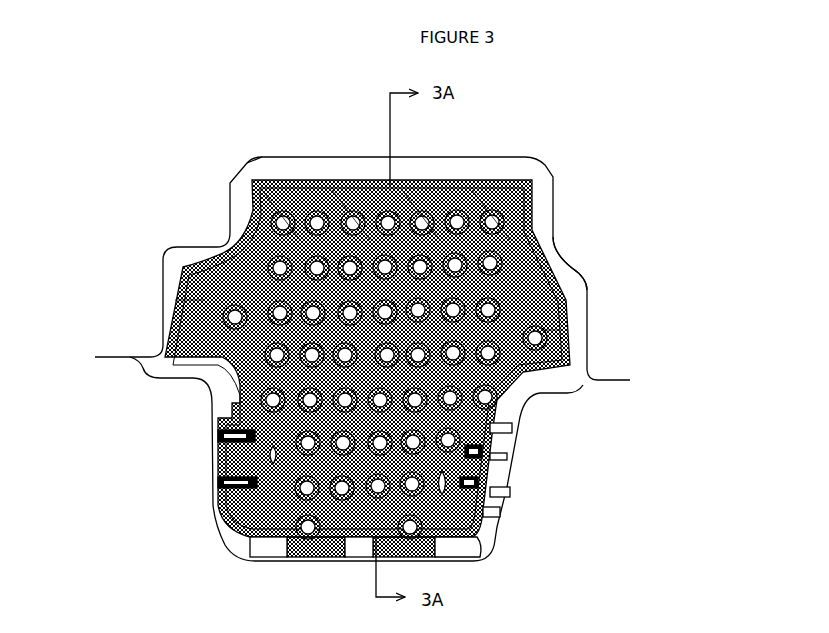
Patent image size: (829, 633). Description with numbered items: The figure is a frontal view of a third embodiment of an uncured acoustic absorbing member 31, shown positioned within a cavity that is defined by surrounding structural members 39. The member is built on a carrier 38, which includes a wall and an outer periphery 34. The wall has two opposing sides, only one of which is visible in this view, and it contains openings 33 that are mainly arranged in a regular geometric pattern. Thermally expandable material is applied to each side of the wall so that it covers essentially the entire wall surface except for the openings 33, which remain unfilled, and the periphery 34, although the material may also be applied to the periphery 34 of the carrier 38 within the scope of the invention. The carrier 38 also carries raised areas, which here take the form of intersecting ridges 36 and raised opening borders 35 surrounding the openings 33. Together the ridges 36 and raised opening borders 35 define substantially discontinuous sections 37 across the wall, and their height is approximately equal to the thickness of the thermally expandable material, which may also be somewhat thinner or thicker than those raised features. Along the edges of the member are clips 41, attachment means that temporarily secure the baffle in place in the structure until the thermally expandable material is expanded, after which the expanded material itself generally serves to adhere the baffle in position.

The acoustic absorbing member 31 is at (222, 232).
The openings 33 is at (353, 212).
The periphery 34 is at (497, 543).
The raised opening borders 35 is at (282, 218).
The ridges 36 is at (445, 194).
The discontinuous sections 37 is at (230, 303).
The carrier 38 is at (250, 178).
The structural members 39 is at (582, 273).
The clips 41 is at (220, 460).